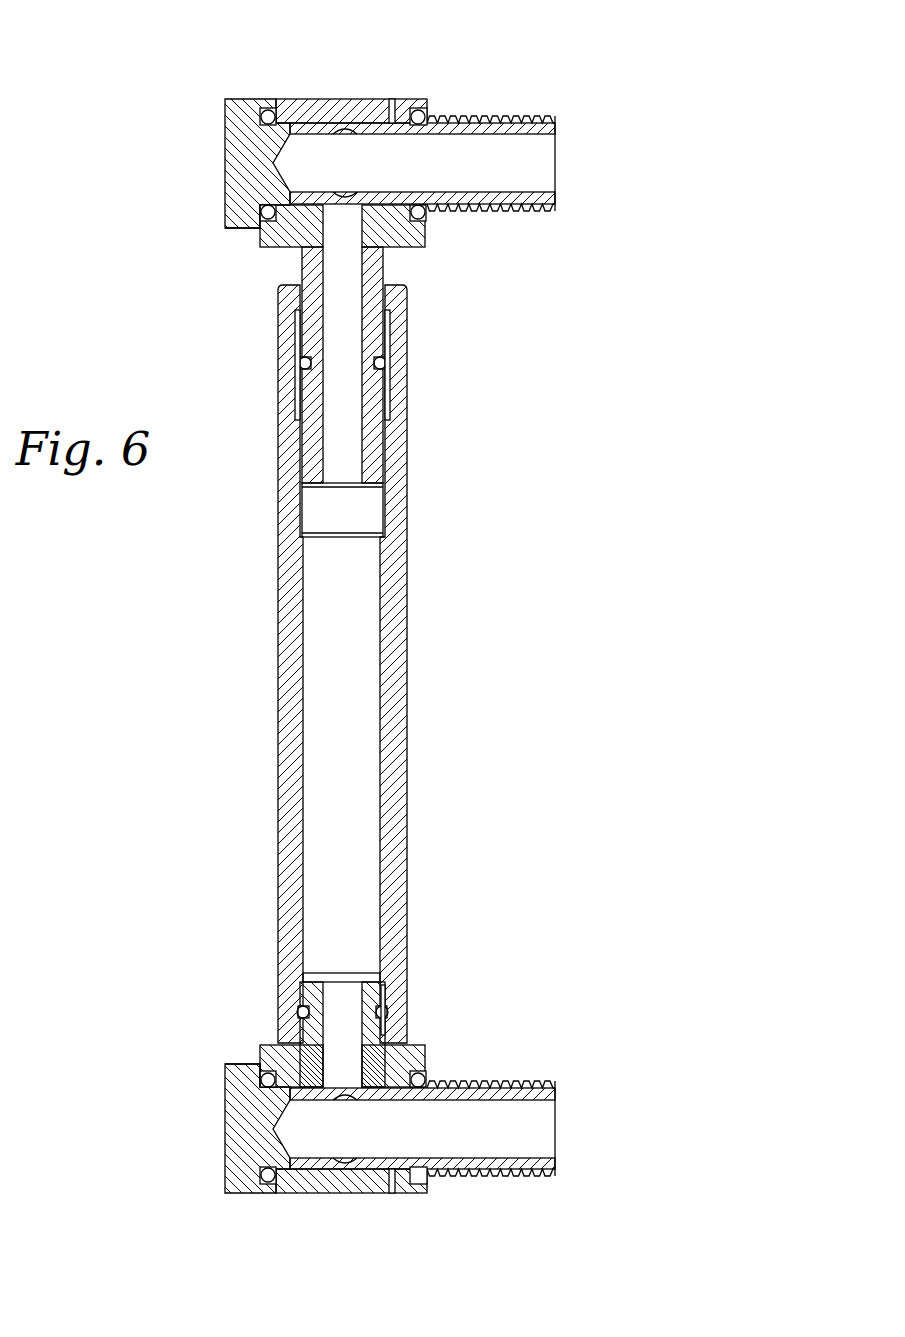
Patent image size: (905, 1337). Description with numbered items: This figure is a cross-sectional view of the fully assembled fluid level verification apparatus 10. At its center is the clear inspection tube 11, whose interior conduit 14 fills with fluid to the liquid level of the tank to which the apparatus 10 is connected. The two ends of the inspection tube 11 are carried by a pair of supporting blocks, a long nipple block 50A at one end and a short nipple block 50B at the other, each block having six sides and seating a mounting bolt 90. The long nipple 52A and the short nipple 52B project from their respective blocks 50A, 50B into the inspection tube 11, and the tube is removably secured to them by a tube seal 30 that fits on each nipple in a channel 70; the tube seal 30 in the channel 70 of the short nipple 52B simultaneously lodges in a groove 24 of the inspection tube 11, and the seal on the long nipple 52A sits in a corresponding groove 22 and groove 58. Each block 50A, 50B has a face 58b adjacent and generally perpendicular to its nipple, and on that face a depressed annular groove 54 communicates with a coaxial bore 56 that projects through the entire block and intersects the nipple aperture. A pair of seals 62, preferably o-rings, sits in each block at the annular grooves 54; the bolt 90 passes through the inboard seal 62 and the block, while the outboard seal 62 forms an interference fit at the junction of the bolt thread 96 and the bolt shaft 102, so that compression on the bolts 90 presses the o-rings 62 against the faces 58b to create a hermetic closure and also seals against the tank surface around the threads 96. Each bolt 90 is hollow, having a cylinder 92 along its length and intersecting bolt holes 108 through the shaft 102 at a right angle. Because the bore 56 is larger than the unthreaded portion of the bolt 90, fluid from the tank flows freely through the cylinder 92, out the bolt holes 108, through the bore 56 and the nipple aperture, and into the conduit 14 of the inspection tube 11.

The fluid level verification apparatus 10 is at (195, 787).
The clear inspection tube 11 is at (407, 806).
The conduit 14 is at (350, 681).
The groove 22 is at (296, 326).
The groove 24 is at (298, 1000).
The tube seal 30 is at (387, 364).
The long nipple block 50A is at (312, 99).
The short nipple block 50B is at (330, 1193).
The long nipple 52A is at (303, 268).
The short nipple 52B is at (392, 1035).
The depressed annular groove 54 is at (240, 197).
The coaxial bore 56 is at (268, 105).
The seal groove 58 is at (421, 1185).
The face 58b is at (260, 242).
The seal 62 is at (426, 113).
The channel 70 is at (390, 334).
The mounting bolt 90 is at (236, 146).
The cylinder 92 is at (520, 160).
The bolt thread 96 is at (520, 1085).
The bolt shaft 102 is at (392, 99).
The bolt holes 108 is at (352, 203).